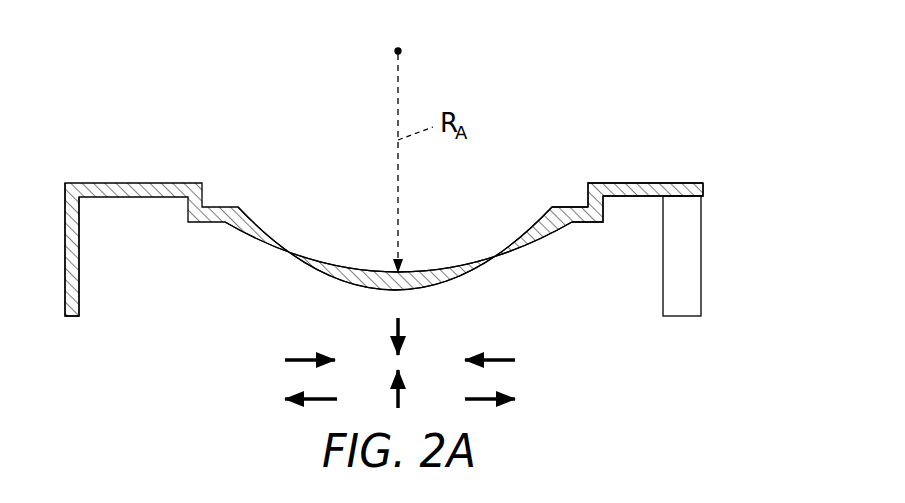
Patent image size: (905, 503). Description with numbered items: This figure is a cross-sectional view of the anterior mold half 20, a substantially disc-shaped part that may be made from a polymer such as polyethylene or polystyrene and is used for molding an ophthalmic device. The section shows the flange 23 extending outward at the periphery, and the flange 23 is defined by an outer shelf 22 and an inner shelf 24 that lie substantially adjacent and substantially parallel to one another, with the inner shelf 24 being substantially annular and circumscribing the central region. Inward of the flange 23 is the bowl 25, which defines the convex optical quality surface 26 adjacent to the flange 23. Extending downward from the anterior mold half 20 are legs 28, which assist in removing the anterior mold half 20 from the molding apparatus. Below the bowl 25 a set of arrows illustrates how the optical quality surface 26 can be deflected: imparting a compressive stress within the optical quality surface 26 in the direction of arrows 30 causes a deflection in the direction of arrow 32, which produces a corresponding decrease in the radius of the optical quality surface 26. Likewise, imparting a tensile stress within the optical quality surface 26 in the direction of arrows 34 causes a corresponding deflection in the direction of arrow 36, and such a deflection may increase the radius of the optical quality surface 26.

The anterior mold half 20 is at (515, 92).
The outer shelf 22 is at (605, 182).
The flange 23 is at (637, 147).
The inner shelf 24 is at (565, 207).
The bowl 25 is at (320, 238).
The optical quality surface 26 is at (448, 267).
The legs 28 is at (82, 262).
The arrows indicating compressive stress direction 30 is at (302, 358).
The arrow indicating deflection direction 32 is at (397, 325).
The arrows indicating tensile stress direction 34 is at (323, 397).
The arrow indicating deflection direction 36 is at (397, 398).